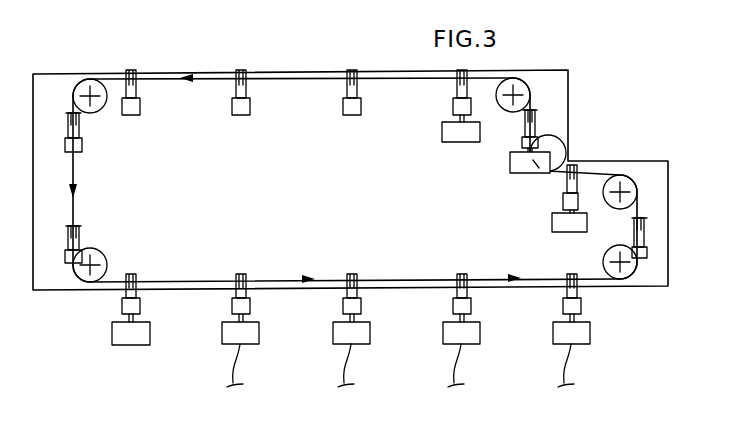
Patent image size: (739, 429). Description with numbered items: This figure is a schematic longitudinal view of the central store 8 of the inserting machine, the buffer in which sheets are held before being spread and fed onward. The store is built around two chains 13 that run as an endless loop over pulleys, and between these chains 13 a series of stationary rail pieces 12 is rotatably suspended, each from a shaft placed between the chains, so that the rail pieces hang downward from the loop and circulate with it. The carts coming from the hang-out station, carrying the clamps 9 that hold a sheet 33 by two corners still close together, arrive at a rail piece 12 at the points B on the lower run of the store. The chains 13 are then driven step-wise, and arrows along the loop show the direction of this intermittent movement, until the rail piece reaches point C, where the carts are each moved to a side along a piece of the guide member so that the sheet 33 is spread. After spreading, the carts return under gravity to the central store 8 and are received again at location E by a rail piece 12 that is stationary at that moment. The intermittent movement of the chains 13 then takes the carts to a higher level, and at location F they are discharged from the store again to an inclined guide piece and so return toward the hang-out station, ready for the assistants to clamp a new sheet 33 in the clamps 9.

The central store 8 is at (299, 116).
The chains 13 is at (199, 276).
The stationary rail piece 12 is at (141, 305).
The clamps 9 is at (148, 334).
The sheet 33 is at (346, 370).
The points B is at (143, 293).
The location F is at (461, 118).
The location E is at (558, 200).
The point C is at (568, 322).